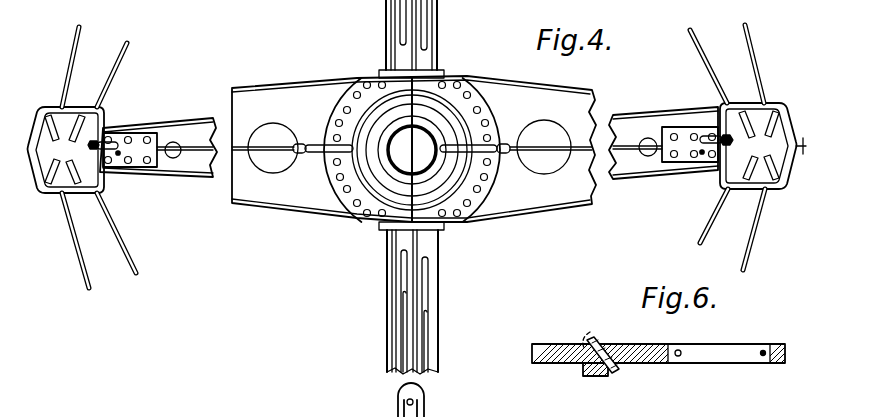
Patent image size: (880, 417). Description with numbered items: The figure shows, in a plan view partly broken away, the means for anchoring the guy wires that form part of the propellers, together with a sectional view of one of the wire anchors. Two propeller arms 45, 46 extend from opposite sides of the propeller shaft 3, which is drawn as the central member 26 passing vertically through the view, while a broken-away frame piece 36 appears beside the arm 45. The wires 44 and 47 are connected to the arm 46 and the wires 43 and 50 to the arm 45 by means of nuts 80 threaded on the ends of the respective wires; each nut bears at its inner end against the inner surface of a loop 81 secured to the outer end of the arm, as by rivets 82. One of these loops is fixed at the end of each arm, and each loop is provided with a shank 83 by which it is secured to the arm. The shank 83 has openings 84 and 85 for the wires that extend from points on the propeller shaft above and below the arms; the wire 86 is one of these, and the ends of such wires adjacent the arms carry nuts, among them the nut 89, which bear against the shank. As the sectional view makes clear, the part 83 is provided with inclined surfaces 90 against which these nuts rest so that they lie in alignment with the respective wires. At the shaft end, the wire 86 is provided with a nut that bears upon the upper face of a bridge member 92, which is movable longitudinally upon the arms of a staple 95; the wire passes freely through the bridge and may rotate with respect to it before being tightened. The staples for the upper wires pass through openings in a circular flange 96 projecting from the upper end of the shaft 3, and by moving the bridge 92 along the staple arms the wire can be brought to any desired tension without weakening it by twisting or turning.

In FIG. 4, the shaft 3 is at (429, 132).
In FIG. 4, the tubular column 26 is at (430, 3).
In FIG. 4, the frame member 36 is at (597, 118).
In FIG. 4, the wire 43 is at (757, 50).
In FIG. 4, the wire 44 is at (73, 44).
In FIG. 4, the arm 45 is at (560, 196).
In FIG. 4, the arm 46 is at (268, 205).
In FIG. 4, the wire 47 is at (121, 57).
In FIG. 4, the wire 50 is at (712, 72).
In FIG. 4, the nut 80 is at (42, 122).
In FIG. 4, the loop 81 is at (68, 116).
In FIG. 6, the loop 81 is at (760, 350).
In FIG. 4, the rivets 82 is at (126, 167).
In FIG. 4, the shank 83 is at (137, 140).
In FIG. 6, the shank 83 is at (640, 345).
In FIG. 6, the opening 84 is at (590, 332).
In FIG. 4, the opening 85 is at (118, 155).
In FIG. 6, the opening 85 is at (612, 366).
In FIG. 4, the wire 86 is at (275, 148).
In FIG. 4, the nut 89 is at (114, 141).
In FIG. 6, the inclined surfaces 90 is at (605, 341).
In FIG. 4, the bridge member 92 is at (302, 153).
In FIG. 4, the staple 95 is at (340, 146).
In FIG. 4, the circular flange 96 is at (442, 168).